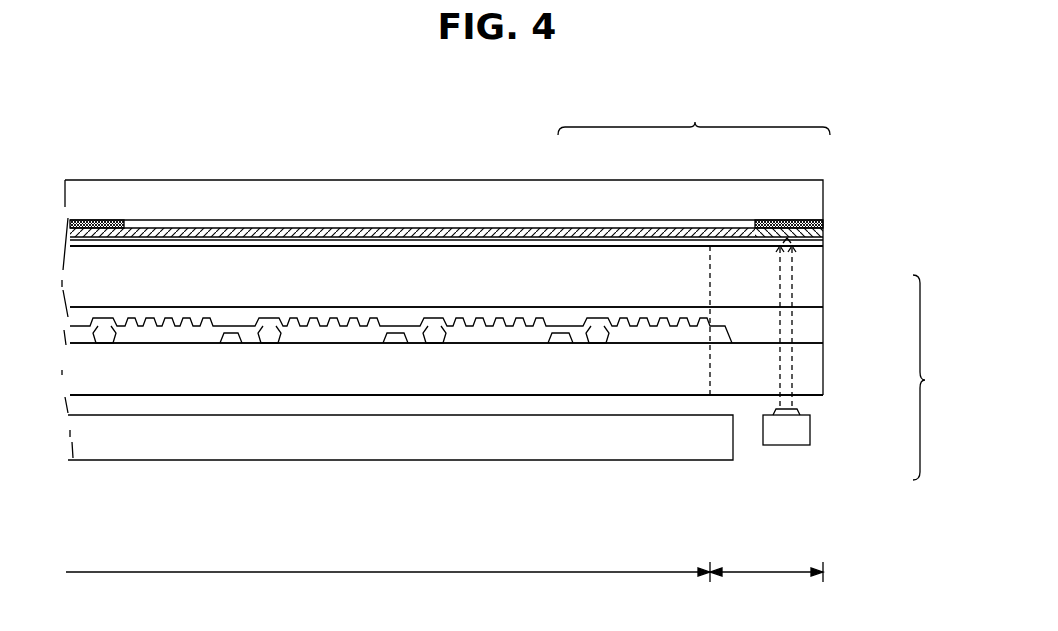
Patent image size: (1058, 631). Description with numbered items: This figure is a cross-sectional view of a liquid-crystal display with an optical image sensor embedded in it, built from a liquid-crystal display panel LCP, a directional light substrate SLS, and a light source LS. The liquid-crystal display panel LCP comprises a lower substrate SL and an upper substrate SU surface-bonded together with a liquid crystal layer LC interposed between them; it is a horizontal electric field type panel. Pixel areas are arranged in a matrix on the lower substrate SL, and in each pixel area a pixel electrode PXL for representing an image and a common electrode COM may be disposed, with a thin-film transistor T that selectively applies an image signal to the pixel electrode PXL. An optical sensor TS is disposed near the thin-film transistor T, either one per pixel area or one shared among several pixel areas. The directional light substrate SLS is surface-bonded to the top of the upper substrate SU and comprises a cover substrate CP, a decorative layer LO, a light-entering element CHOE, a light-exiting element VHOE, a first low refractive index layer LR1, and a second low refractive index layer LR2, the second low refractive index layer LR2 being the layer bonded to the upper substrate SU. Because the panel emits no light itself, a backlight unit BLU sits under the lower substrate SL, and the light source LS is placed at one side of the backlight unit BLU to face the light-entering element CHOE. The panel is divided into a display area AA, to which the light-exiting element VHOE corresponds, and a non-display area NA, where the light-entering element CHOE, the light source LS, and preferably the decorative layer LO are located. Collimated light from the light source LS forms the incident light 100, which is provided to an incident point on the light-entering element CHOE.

The decorative layer LO is at (94, 219).
The directional light substrate SLS is at (694, 118).
The cover substrate CP is at (557, 200).
The first low refractive index layer LR1 is at (645, 226).
The light-exiting element VHOE is at (710, 235).
The second low refractive index layer LR2 is at (747, 246).
The light-entering element CHOE is at (798, 227).
The upper substrate SU is at (813, 287).
The liquid crystal layer LC is at (813, 328).
The lower substrate SL is at (813, 362).
The incident light 100 is at (787, 386).
The liquid-crystal display panel LCP is at (934, 377).
The light source LS is at (786, 427).
The backlight unit BLU is at (725, 455).
The thin-film transistor T is at (100, 343).
The optical sensor TS is at (232, 343).
The pixel electrode PXL is at (128, 326).
The common electrode COM is at (143, 326).
The display area AA is at (388, 579).
The non-display area NA is at (766, 579).